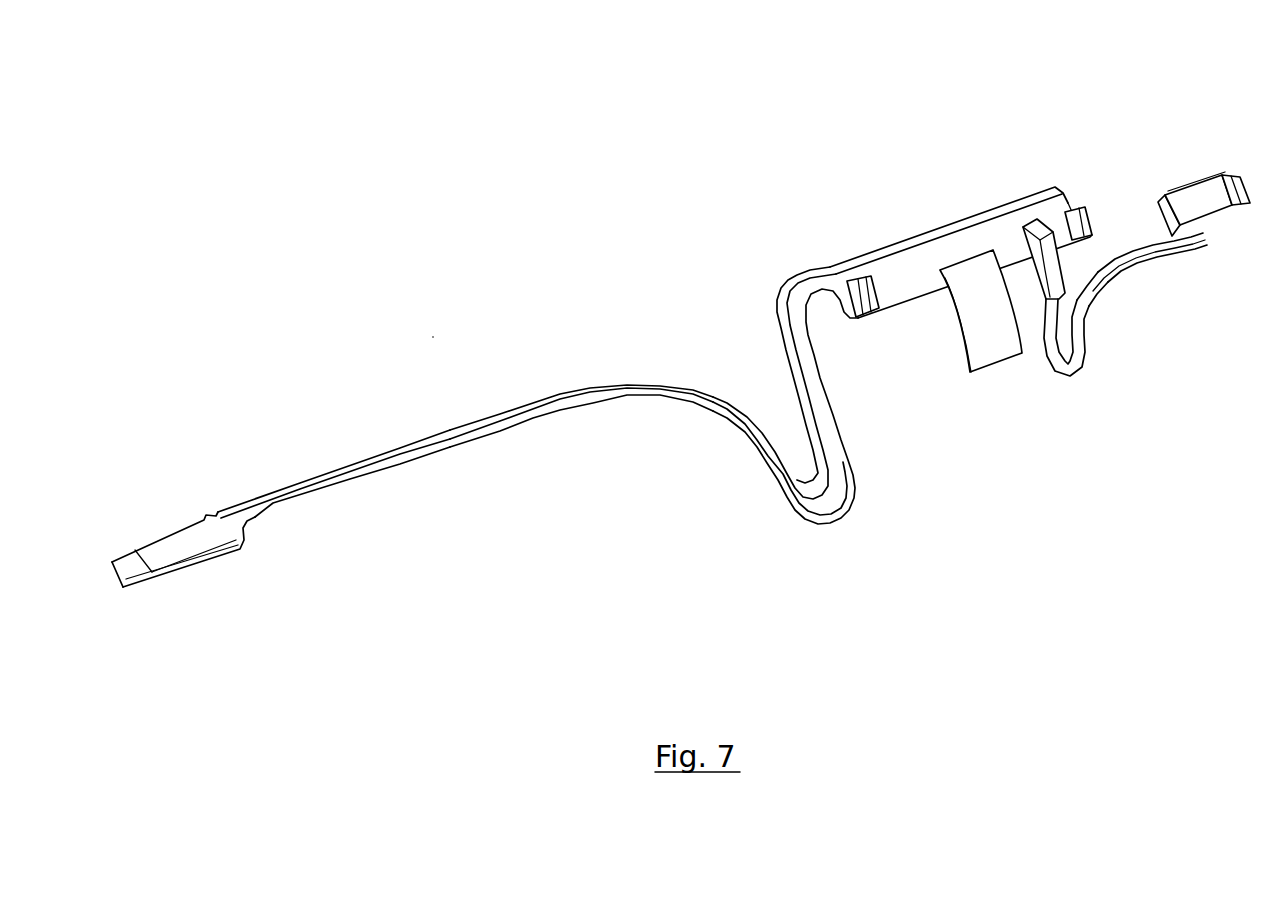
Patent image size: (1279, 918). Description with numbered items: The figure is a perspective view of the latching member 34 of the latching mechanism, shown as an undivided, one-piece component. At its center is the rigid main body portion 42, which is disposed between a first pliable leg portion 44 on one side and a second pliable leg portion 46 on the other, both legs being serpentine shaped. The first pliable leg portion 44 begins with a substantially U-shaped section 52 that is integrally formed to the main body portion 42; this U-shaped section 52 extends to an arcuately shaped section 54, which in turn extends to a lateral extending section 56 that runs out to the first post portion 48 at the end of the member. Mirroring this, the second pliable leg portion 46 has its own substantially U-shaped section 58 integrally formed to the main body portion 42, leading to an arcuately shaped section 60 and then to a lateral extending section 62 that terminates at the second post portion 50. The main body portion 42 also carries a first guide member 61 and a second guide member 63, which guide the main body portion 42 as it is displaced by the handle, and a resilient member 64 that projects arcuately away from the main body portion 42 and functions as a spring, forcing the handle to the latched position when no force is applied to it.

The latching member 34 is at (702, 188).
The main body portion 42 is at (960, 220).
The first pliable leg portion 44 is at (658, 395).
The second pliable leg portion 46 is at (1108, 287).
The first post portion 48 is at (147, 553).
The second post portion 50 is at (1207, 183).
The substantially U-shaped section 52 is at (833, 521).
The arcuately shaped section 54 is at (627, 386).
The lateral extending section 56 is at (378, 457).
The substantially U-shaped section 58 is at (1070, 380).
The arcuately shaped section 60 is at (1098, 270).
The first guide member 61 is at (842, 282).
The lateral extending section 62 is at (1147, 247).
The second guide member 63 is at (1073, 207).
The resilient member 64 is at (990, 320).